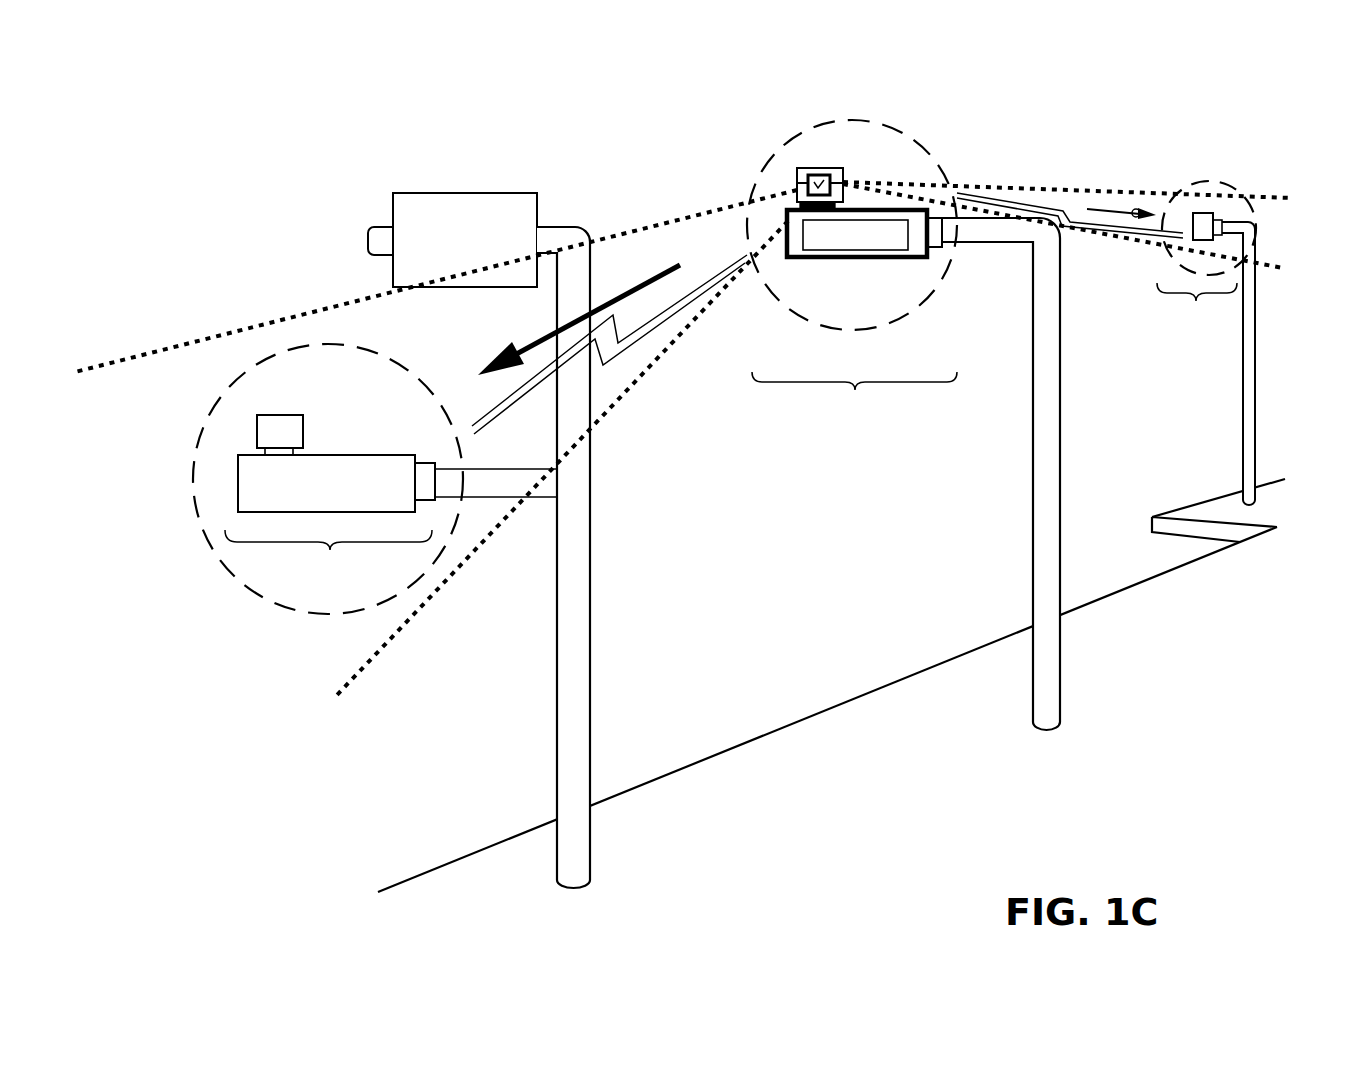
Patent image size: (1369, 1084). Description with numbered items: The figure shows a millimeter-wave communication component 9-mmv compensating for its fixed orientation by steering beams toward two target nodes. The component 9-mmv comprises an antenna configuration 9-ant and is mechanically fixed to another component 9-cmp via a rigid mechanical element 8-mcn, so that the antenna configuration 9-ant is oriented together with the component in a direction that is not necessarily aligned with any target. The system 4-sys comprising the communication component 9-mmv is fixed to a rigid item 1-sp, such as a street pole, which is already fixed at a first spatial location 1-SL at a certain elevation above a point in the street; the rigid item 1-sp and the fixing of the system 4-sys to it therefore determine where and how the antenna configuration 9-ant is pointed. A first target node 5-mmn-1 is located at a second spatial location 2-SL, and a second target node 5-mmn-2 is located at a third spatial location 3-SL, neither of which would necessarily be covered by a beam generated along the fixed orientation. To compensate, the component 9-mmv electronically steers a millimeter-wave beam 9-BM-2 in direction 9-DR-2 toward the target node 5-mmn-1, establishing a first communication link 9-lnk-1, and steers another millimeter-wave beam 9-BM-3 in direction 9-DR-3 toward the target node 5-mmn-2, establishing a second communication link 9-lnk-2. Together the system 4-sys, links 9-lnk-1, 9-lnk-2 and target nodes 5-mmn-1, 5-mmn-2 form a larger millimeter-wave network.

The rigid item 1-sp is at (1033, 514).
The first spatial location 1-SL is at (915, 314).
The spatial location of first target node 2-SL is at (222, 560).
The spatial location of second target node 3-SL is at (1200, 183).
The system 4-sys is at (854, 391).
The target node 5-mmn-1 is at (391, 492).
The target node 5-mmn-2 is at (1194, 359).
The rigid mechanical element 8-mcn is at (922, 258).
The component 9-cmp is at (893, 248).
The millimeter-wave communication component 9-mmv is at (797, 182).
The antenna configuration 9-ant is at (813, 175).
The millimeter-wave beam 9-BM-2 is at (622, 395).
The millimeter-wave beam 9-BM-3 is at (1003, 188).
The direction 9-DR-2 is at (636, 286).
The direction 9-DR-3 is at (1090, 208).
The first communication link 9-lnk-1 is at (640, 338).
The second communication link 9-lnk-2 is at (1112, 233).